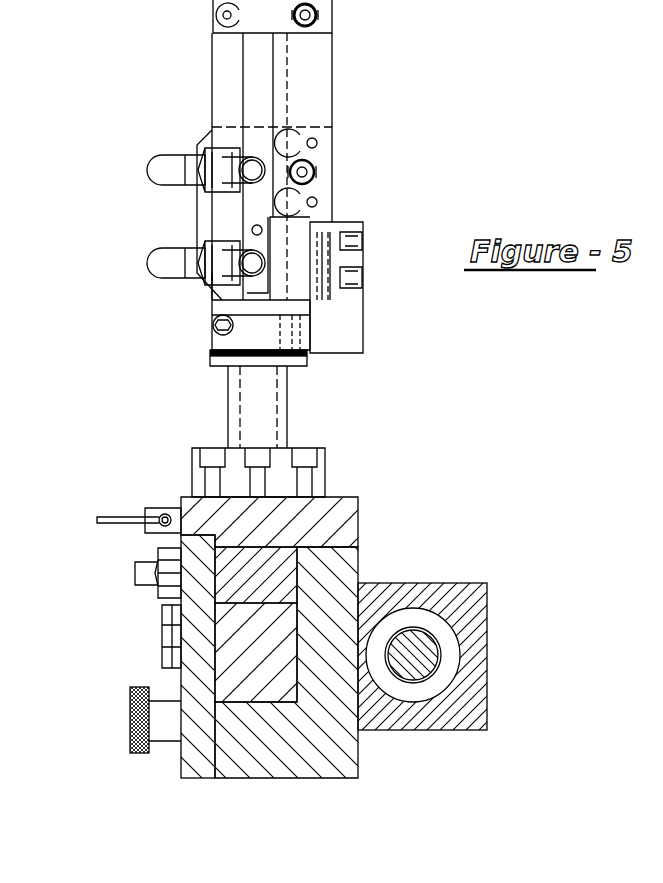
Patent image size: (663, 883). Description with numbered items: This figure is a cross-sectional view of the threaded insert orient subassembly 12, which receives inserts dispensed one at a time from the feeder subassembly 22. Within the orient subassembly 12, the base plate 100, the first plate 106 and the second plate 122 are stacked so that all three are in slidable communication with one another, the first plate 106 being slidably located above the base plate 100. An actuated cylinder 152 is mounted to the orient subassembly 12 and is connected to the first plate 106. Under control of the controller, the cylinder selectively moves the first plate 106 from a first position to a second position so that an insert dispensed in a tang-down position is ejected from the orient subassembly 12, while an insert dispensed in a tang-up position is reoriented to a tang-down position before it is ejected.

The orient subassembly 12 is at (136, 628).
The feeder subassembly 22 is at (332, 78).
The base plate 100 is at (297, 748).
The first plate 106 is at (245, 687).
The second plate 122 is at (278, 577).
The actuated cylinder 152 is at (487, 602).